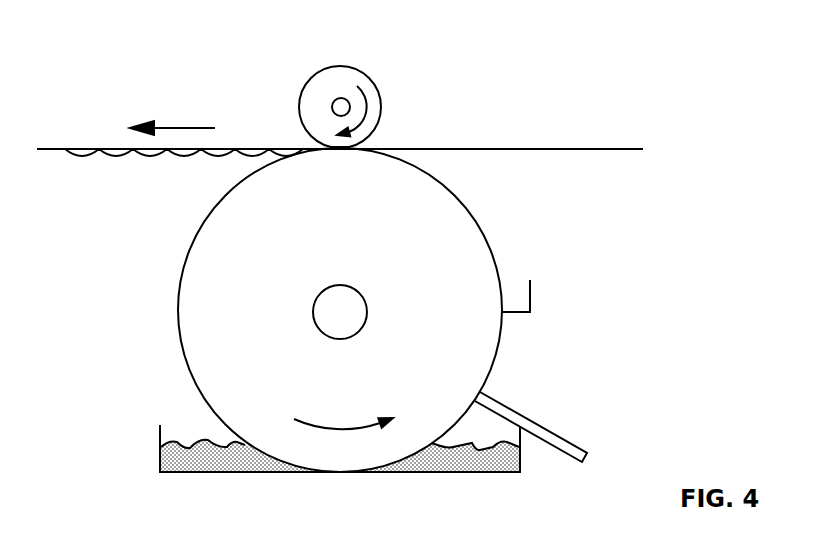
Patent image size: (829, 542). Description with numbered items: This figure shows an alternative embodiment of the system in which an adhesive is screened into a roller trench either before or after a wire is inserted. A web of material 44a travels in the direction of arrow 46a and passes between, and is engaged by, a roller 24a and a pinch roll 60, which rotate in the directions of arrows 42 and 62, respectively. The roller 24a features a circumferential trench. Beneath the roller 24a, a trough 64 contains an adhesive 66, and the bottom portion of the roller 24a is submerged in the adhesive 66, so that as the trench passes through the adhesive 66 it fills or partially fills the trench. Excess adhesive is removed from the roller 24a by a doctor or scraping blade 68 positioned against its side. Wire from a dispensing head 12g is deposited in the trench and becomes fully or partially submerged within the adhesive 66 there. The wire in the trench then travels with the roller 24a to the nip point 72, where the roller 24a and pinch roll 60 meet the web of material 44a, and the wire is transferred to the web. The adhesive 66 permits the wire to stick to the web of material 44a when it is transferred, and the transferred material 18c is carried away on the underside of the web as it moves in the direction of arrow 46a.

The web of material 44a is at (561, 149).
The transferred coating layer 18c is at (118, 157).
The arrow 46a is at (181, 124).
The pinch roll 60 is at (352, 67).
The arrow 62 is at (372, 100).
The nip point 72 is at (368, 148).
The roller 24a is at (270, 345).
The arrow 42 is at (333, 430).
The dispensing head 12g is at (530, 296).
The doctor or scraping blade 68 is at (518, 412).
The adhesive 66 is at (452, 463).
The trough 64 is at (159, 462).